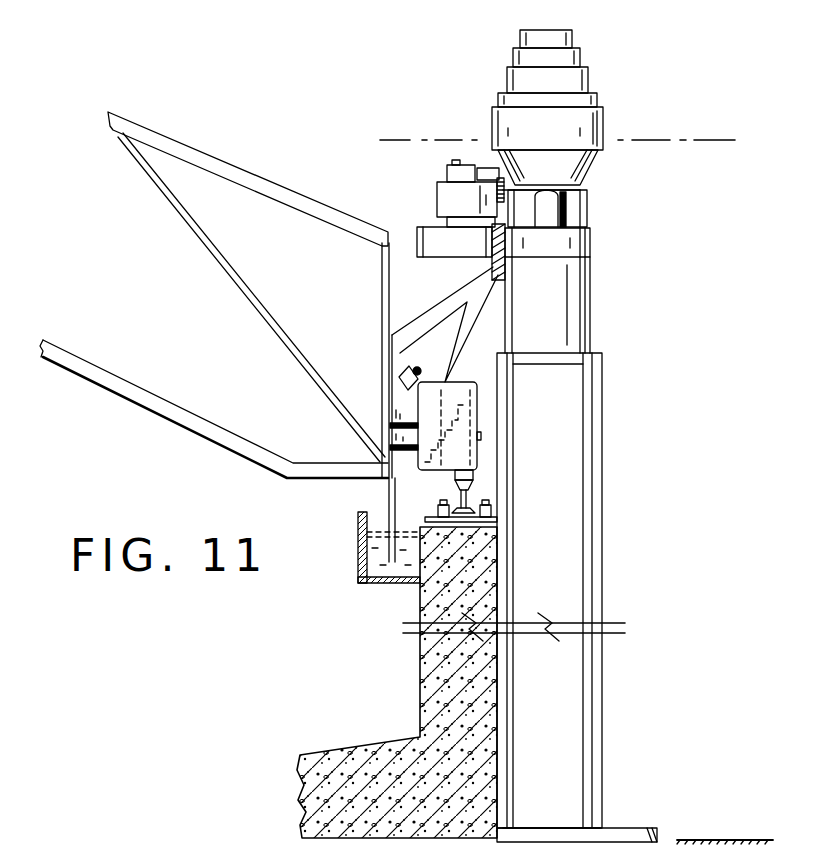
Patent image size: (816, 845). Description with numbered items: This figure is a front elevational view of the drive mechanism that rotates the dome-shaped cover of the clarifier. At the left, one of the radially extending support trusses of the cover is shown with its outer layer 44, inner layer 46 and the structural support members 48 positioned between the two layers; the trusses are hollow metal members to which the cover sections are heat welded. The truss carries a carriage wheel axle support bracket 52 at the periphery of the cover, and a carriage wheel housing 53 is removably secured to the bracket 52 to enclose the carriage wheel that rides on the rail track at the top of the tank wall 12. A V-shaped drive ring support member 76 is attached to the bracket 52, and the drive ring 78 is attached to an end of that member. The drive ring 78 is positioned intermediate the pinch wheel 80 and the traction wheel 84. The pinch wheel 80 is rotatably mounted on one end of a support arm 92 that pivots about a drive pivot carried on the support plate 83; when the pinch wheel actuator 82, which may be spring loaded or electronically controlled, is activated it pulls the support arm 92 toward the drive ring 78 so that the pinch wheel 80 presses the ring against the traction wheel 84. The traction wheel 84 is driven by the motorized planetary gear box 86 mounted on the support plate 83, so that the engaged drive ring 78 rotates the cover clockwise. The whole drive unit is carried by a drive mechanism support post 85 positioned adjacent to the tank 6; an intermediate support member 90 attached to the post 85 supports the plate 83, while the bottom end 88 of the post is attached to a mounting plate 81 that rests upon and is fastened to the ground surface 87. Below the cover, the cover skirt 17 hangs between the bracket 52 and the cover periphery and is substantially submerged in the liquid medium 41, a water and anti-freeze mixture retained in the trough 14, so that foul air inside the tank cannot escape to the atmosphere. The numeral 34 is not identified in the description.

The tank 6 is at (437, 667).
The tank wall 12 is at (405, 140).
The trough 14 is at (360, 535).
The cover skirt 17 is at (388, 497).
The head assembly 34 is at (608, 66).
The liquid medium 41 is at (385, 568).
The outer layer 44 is at (232, 165).
The inner layer 46 is at (163, 410).
The structural support members 48 is at (220, 257).
The carriage wheel axle support bracket 52 is at (402, 395).
The carriage wheel housing 53 is at (465, 393).
The V-shaped drive ring support member 76 is at (427, 313).
The drive ring 78 is at (494, 240).
The pinch wheel 80 is at (437, 240).
The mounting plate 81 is at (630, 832).
The pinch wheel actuator 82 is at (503, 170).
The support plate 83 is at (598, 153).
The traction wheel 84 is at (587, 248).
The drive mechanism support post 85 is at (572, 465).
The motorized planetary gear box 86 is at (587, 130).
The ground surface 87 is at (733, 838).
The bottom end of post 88 is at (580, 823).
The intermediate support member 90 is at (550, 298).
The support arm 92 is at (443, 195).